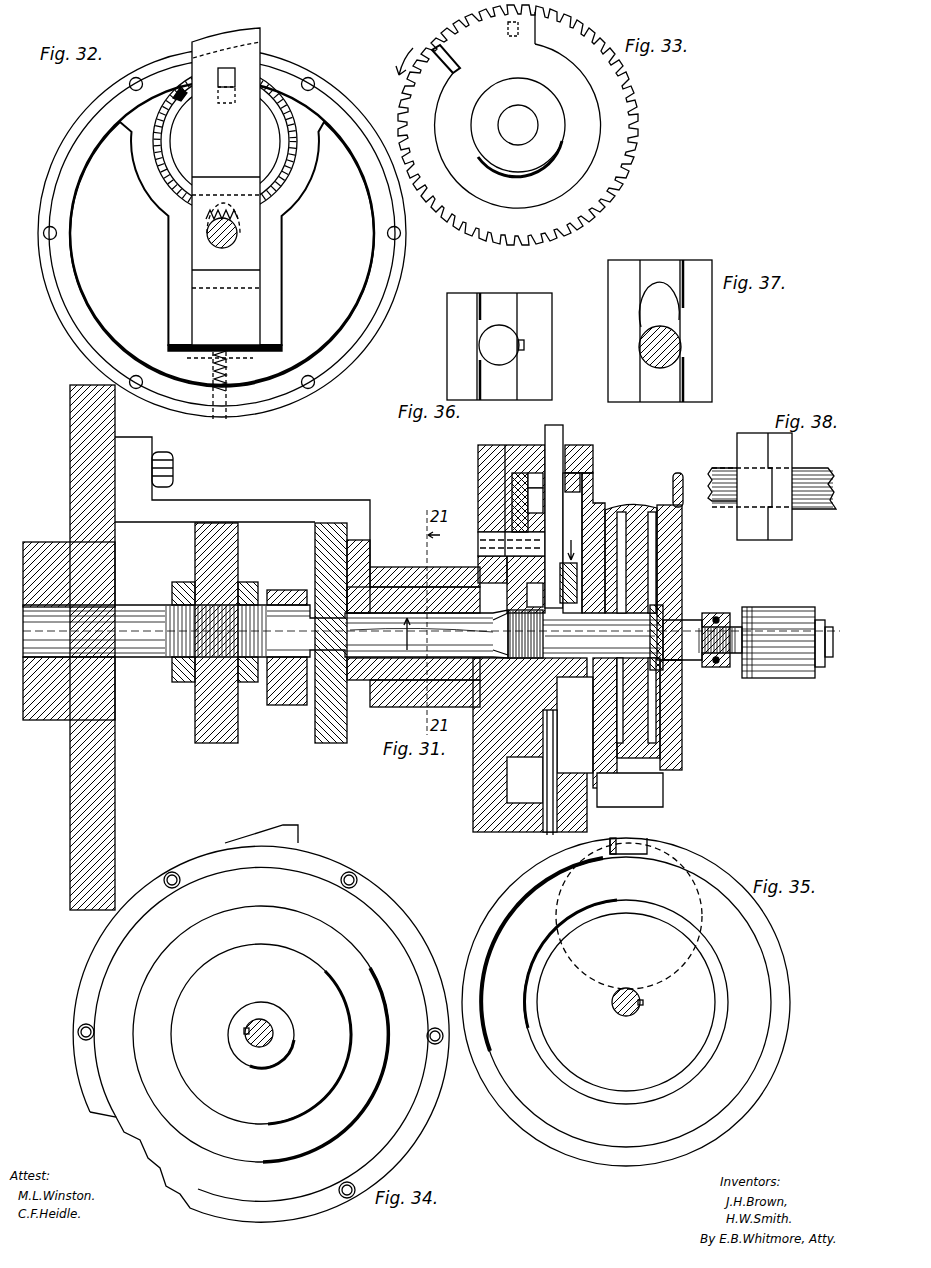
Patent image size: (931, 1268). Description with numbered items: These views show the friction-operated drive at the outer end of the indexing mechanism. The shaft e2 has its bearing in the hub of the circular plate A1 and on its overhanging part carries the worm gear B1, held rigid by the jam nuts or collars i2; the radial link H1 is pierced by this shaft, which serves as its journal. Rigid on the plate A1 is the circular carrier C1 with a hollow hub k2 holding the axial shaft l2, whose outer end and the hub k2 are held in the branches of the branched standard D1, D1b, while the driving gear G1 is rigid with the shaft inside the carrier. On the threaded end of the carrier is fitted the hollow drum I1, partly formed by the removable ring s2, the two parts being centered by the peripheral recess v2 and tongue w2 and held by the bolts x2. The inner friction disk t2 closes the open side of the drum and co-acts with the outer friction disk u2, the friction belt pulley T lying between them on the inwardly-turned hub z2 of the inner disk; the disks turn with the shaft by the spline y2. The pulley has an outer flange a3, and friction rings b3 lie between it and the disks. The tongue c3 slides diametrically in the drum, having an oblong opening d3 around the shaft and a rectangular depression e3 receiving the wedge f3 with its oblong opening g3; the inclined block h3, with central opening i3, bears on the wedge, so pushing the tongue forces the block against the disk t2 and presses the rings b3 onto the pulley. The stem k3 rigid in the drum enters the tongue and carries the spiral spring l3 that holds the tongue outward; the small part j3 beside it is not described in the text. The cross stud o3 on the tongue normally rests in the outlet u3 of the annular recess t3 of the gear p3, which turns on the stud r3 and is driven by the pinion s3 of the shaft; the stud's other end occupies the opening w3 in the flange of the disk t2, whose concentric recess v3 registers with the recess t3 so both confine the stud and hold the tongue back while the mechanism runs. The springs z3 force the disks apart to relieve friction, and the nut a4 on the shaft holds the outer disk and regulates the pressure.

In FIG. 32, the peripheral recess v2 is at (376, 316).
In FIG. 32, the hollow drum I1 is at (222, 234).
In FIG. 31, the hollow drum I1 is at (480, 455).
In FIG. 34, the hollow drum I1 is at (250, 1034).
In FIG. 32, the confining gear p3 is at (163, 182).
In FIG. 33, the confining gear p3 is at (632, 128).
In FIG. 31, the confining gear p3 is at (509, 470).
In FIG. 32, the annular recess t3 is at (167, 157).
In FIG. 33, the annular recess t3 is at (506, 127).
In FIG. 31, the annular recess t3 is at (535, 547).
In FIG. 35, the annular recess t3 is at (676, 900).
In FIG. 32, the tongue c3 is at (226, 186).
In FIG. 31, the tongue c3 is at (553, 430).
In FIG. 34, the tongue c3 is at (283, 832).
In FIG. 35, the tongue c3 is at (542, 901).
In FIG. 32, the peripheral opening u3 is at (187, 92).
In FIG. 33, the peripheral opening u3 is at (498, 110).
In FIG. 32, the cross stud o3 is at (234, 72).
In FIG. 31, the cross stud o3 is at (535, 487).
In FIG. 32, the oblong opening d3 is at (232, 208).
In FIG. 32, the pinion s3 is at (205, 218).
In FIG. 31, the pinion s3 is at (505, 634).
In FIG. 32, the axial shaft l2 is at (208, 235).
In FIG. 37, the axial shaft l2 is at (679, 340).
In FIG. 38, the axial shaft l2 is at (731, 470).
In FIG. 31, the axial shaft l2 is at (427, 632).
In FIG. 34, the axial shaft l2 is at (262, 1023).
In FIG. 35, the axial shaft l2 is at (631, 993).
In FIG. 32, the rectangular depression e3 is at (227, 234).
In FIG. 31, the rectangular depression e3 is at (565, 692).
In FIG. 32, the stem k3 is at (229, 371).
In FIG. 31, the stem k3 is at (557, 752).
In FIG. 32, the pin j3 is at (212, 372).
In FIG. 33, the pin j3 is at (514, 35).
In FIG. 36, the inclined block h3 is at (499, 346).
In FIG. 38, the inclined block h3 is at (782, 518).
In FIG. 31, the inclined block h3 is at (584, 692).
In FIG. 36, the central opening i3 is at (501, 345).
In FIG. 37, the wedge f3 is at (660, 331).
In FIG. 38, the wedge f3 is at (746, 442).
In FIG. 31, the wedge f3 is at (575, 572).
In FIG. 37, the oblong opening g3 is at (659, 304).
In FIG. 38, the spline y2 is at (818, 512).
In FIG. 31, the spline y2 is at (680, 660).
In FIG. 34, the spline y2 is at (244, 1031).
In FIG. 35, the spline y2 is at (643, 1003).
In FIG. 31, the shaft e2 is at (128, 608).
In FIG. 31, the circular plate A1 is at (82, 497).
In FIG. 31, the circular standard or carrier C1 is at (263, 507).
In FIG. 31, the driving gear G1 is at (332, 743).
In FIG. 31, the worm gear B1 is at (232, 540).
In FIG. 31, the jam nuts or collars i2 is at (250, 681).
In FIG. 31, the radial link H1 is at (283, 706).
In FIG. 31, the branched standard D1 is at (385, 567).
In FIG. 31, the hub k2 is at (392, 700).
In FIG. 31, the stud r3 is at (480, 545).
In FIG. 31, the removable ring s2 is at (582, 452).
In FIG. 34, the removable ring s2 is at (415, 958).
In FIG. 31, the concentric circular recess v3 is at (558, 782).
In FIG. 35, the concentric circular recess v3 is at (626, 1002).
In FIG. 31, the friction rings b3 is at (592, 512).
In FIG. 34, the friction rings b3 is at (318, 962).
In FIG. 31, the friction belt pulley T is at (633, 513).
In FIG. 31, the inner friction disk t2 is at (600, 790).
In FIG. 34, the inner friction disk t2 is at (268, 1034).
In FIG. 35, the inner friction disk t2 is at (496, 912).
In FIG. 31, the outer friction disk u2 is at (681, 556).
In FIG. 31, the outer flange a3 is at (678, 476).
In FIG. 31, the springs z3 is at (686, 610).
In FIG. 31, the inwardly-turned hub z2 is at (668, 690).
In FIG. 34, the inwardly-turned hub z2 is at (263, 1060).
In FIG. 31, the nut a4 is at (715, 613).
In FIG. 31, the branched standard D1b is at (770, 612).
In FIG. 31, the spiral spring l3 is at (525, 780).
In FIG. 31, the tongue w2 is at (552, 838).
In FIG. 34, the bolts x2 is at (347, 1199).
In FIG. 35, the opening w3 is at (630, 844).